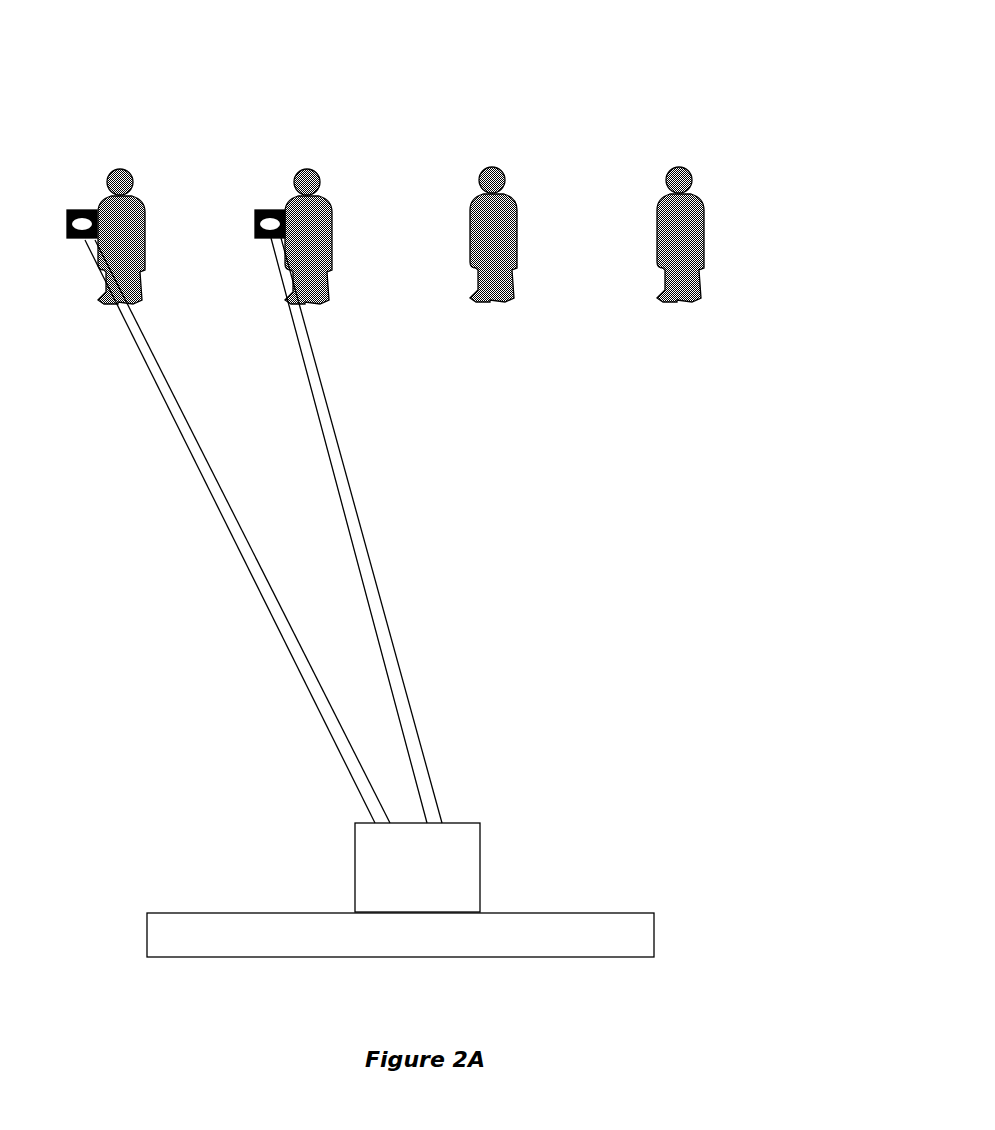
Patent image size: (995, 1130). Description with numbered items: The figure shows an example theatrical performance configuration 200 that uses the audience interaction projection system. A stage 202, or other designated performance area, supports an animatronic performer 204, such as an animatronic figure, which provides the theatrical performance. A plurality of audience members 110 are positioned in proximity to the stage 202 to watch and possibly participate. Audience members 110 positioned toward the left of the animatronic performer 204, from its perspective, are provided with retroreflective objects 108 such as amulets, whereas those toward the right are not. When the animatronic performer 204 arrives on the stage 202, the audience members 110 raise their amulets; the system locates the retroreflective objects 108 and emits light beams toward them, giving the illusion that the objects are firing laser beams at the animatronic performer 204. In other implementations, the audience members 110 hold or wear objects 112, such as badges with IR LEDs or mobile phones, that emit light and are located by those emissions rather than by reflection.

The theatrical performance configuration 200 is at (436, 45).
The retroreflective objects 108 is at (88, 210).
The audience members 110 is at (140, 210).
The objects 112 is at (68, 240).
The stage 202 is at (192, 913).
The animatronic performer 204 is at (355, 870).